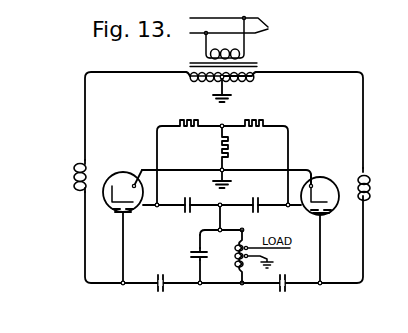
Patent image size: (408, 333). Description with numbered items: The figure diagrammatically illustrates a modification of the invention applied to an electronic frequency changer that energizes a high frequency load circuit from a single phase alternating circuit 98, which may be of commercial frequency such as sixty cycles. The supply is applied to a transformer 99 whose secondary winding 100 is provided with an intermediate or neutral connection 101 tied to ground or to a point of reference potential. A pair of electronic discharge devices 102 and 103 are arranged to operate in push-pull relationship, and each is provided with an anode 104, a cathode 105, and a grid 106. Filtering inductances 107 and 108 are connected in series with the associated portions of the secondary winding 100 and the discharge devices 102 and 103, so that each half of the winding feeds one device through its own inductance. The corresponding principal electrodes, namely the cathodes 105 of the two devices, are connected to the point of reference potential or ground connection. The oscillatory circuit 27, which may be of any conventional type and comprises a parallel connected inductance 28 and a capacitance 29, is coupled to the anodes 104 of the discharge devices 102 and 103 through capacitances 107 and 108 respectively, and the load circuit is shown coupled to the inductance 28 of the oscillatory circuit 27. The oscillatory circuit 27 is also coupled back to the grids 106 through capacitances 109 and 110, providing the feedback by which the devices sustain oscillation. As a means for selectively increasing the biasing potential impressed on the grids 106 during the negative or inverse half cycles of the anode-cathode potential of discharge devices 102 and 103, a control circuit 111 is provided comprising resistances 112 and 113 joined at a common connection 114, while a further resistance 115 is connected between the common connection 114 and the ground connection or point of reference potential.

The single phase alternating circuit 98 is at (241, 27).
The transformer 99 is at (262, 66).
The secondary winding 100 is at (202, 81).
The intermediate or neutral connection 101 is at (234, 82).
The electronic discharge device 102 is at (116, 177).
The electronic discharge device 103 is at (324, 179).
The anode 104 is at (131, 213).
The cathode 105 is at (139, 172).
The grid 106 is at (113, 213).
The filtering inductance 107 is at (80, 166).
The filtering inductance 108 is at (370, 183).
The capacitance 109 is at (186, 201).
The capacitance 110 is at (253, 204).
The control circuit 111 is at (230, 119).
The resistance 112 is at (184, 119).
The resistance 113 is at (260, 120).
The common connection 114 is at (229, 133).
The resistance 115 is at (216, 153).
The oscillatory circuit 27 is at (224, 273).
The inductance 28 is at (226, 250).
The capacitance 29 is at (191, 255).